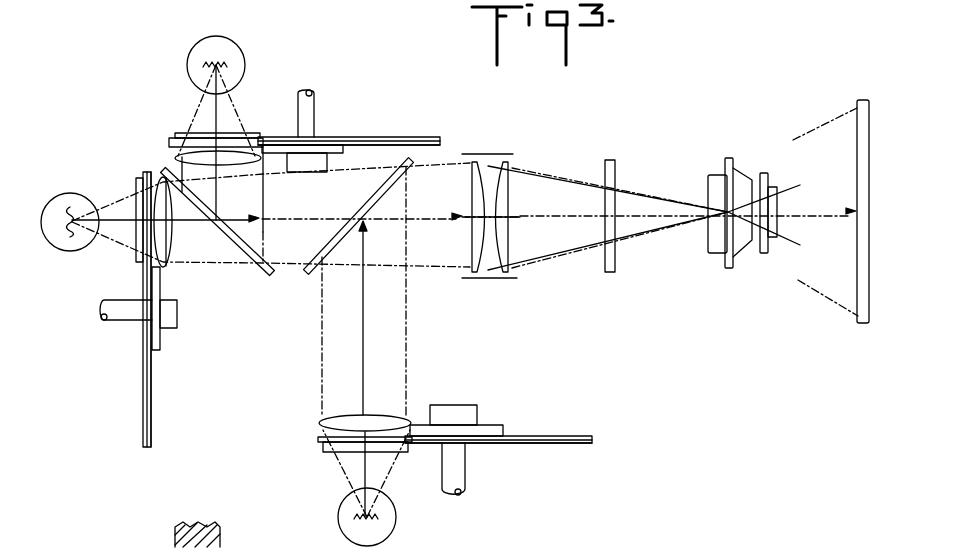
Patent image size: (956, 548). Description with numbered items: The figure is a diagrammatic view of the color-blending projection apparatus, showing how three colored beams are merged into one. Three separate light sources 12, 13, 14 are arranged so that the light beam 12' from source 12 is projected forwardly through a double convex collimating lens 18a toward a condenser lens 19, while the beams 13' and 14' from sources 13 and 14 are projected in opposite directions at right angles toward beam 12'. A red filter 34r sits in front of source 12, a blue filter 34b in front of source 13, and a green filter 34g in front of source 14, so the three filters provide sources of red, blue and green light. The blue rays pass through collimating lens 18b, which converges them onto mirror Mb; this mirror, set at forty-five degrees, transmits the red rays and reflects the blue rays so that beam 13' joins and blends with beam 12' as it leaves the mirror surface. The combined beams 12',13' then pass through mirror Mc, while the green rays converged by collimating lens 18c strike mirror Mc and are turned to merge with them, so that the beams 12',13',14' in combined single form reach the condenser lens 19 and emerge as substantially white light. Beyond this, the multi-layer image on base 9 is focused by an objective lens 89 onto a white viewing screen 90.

The base 9 is at (611, 162).
The light source 12 is at (70, 209).
The light source 13 is at (226, 55).
The light source 14 is at (377, 488).
The light beam 12' is at (271, 215).
The light beam 13' is at (220, 164).
The light beam 14' is at (364, 342).
The combined beams 12',13' is at (359, 209).
The combined beams 12',13',14' is at (634, 209).
The collimating lens 18a is at (166, 262).
The collimating lens 18b is at (233, 153).
The collimating lens 18c is at (343, 420).
The condenser lens 19 is at (488, 165).
The red filter 34r is at (133, 183).
The blue filter 34b is at (182, 132).
The green filter 34g is at (327, 453).
The objective lens 89 is at (735, 180).
The viewing screen 90 is at (856, 103).
The mirror Mb is at (243, 255).
The mirror Mc is at (310, 272).